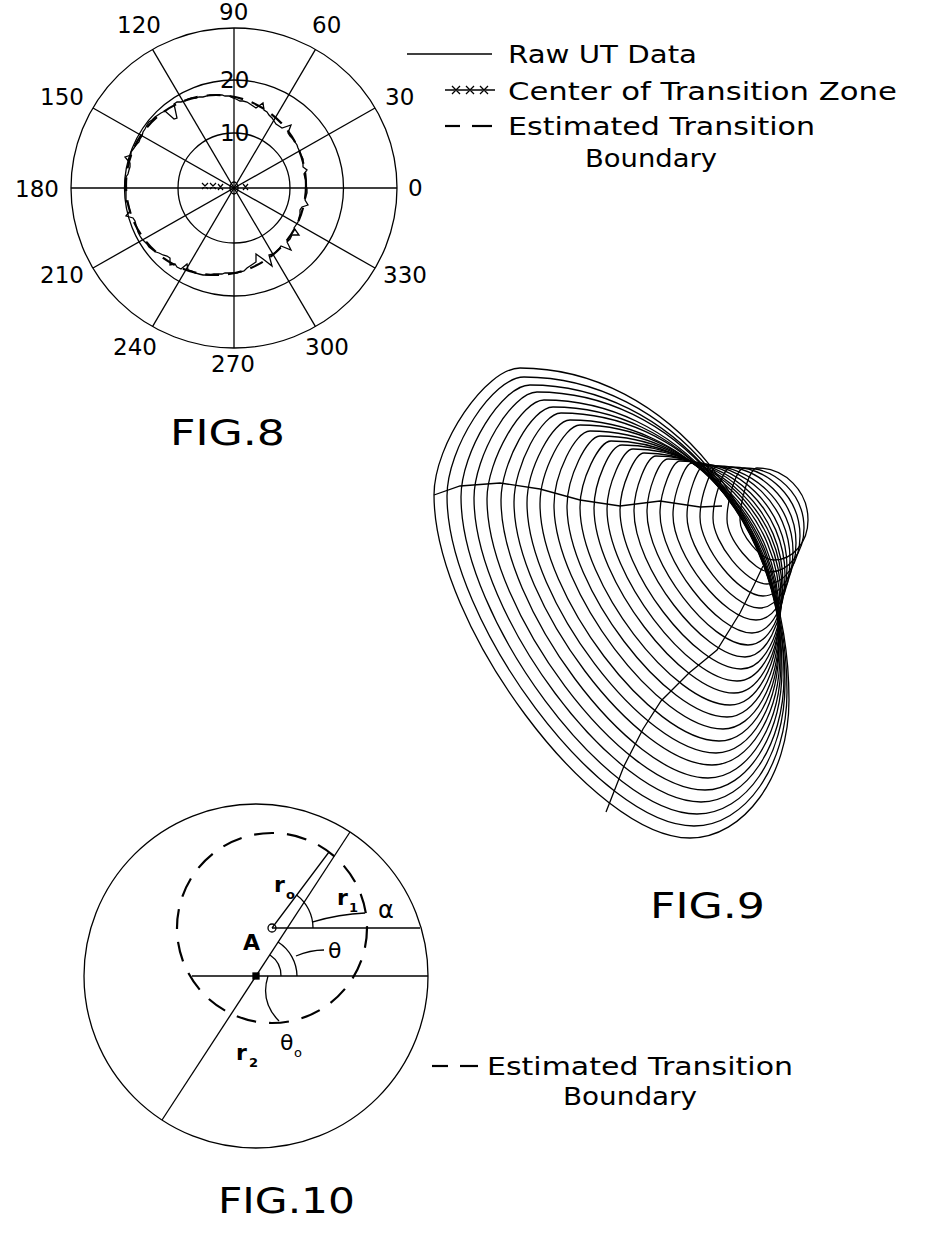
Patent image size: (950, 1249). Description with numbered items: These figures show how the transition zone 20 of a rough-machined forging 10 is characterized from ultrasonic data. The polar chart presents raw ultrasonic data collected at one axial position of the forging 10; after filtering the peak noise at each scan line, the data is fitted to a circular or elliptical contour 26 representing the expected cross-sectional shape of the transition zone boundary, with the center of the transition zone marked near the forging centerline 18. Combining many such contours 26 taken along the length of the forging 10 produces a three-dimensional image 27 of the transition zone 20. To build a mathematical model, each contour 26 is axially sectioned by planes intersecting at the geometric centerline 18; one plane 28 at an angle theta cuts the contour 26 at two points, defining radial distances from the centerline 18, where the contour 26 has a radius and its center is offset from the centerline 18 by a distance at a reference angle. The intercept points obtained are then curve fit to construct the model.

In FIG. 10, the rough-machined forging 10 is at (372, 1102).
In FIG. 8, the geometric centerline 18 is at (237, 189).
In FIG. 10, the geometric centerline 18 is at (196, 977).
In FIG. 10, the transition zone 20 is at (230, 852).
In FIG. 8, the transition zone contour 26 is at (307, 100).
In FIG. 9, the transition zone contour 26 is at (698, 668).
In FIG. 10, the transition zone contour 26 is at (343, 987).
In FIG. 9, the three-dimensional image 27 is at (621, 553).
In FIG. 10, the plane 28 is at (317, 879).